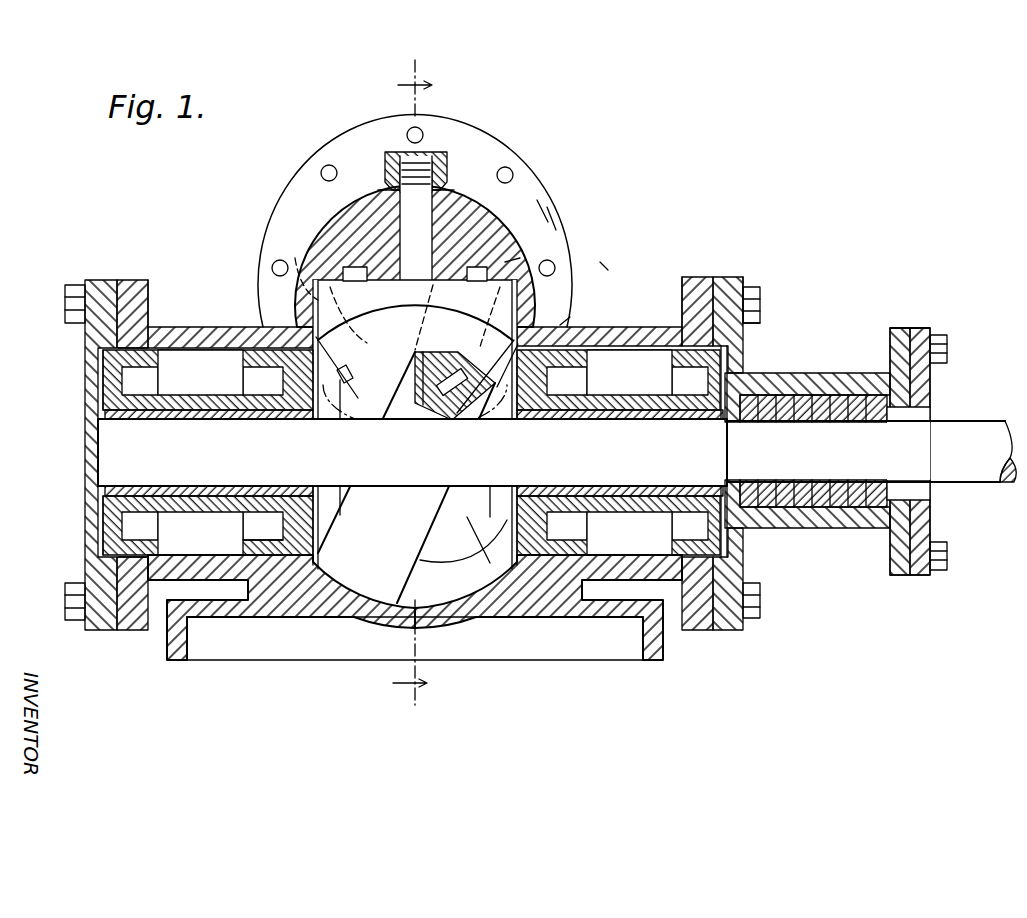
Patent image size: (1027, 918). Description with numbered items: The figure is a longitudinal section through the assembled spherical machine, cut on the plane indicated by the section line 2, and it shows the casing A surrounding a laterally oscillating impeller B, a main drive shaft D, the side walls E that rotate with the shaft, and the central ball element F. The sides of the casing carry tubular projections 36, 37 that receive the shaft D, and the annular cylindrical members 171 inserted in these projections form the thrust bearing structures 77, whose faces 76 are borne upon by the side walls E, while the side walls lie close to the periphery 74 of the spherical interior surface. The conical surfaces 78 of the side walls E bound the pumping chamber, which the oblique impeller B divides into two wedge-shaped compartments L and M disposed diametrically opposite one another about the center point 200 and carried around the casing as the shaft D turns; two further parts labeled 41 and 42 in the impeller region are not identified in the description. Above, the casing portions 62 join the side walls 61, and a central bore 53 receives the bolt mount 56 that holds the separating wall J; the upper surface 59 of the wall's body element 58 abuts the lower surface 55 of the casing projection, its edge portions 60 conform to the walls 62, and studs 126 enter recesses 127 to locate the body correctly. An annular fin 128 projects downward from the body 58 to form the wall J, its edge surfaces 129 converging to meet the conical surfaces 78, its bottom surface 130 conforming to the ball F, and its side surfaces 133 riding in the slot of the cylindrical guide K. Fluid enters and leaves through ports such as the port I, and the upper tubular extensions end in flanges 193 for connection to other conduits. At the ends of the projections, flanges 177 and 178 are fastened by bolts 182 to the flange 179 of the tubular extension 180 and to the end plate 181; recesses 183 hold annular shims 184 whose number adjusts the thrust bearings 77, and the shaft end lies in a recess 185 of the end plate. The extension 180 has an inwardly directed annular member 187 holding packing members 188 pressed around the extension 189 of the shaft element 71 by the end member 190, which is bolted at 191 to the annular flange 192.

The section line 2 is at (417, 372).
The tubular projection 36 is at (208, 327).
The tubular projection 37 is at (636, 327).
The piston 41 is at (390, 440).
The cylinder wall 42 is at (356, 398).
The central bore 53 is at (430, 223).
The lower surface 55 is at (375, 268).
The central bolt mount 56 is at (397, 114).
The body element 58 is at (600, 262).
The upper surface 59 is at (345, 305).
The edge portions 60 is at (298, 318).
The side walls 61 is at (305, 283).
The casing portions 62 is at (318, 233).
The shaft element 71 is at (557, 452).
The periphery 74 is at (300, 578).
The faces 76 is at (287, 530).
The thrust bearing structures 77 is at (158, 530).
The conical surfaces 78 is at (510, 565).
The studs 126 is at (505, 262).
The recesses 127 is at (537, 200).
The annular fin 128 is at (470, 320).
The edge surfaces 129 is at (463, 440).
The bottom surface 130 is at (353, 330).
The side surfaces 133 is at (283, 418).
The annular cylindrical members 171 is at (200, 402).
The flange 177 is at (703, 283).
The flange 178 is at (137, 280).
The flange 179 is at (748, 282).
The tubular extension 180 is at (835, 382).
The end plate 181 is at (87, 338).
The bolts 182 is at (65, 302).
The recesses 183 is at (97, 347).
The annular shims 184 is at (110, 520).
The recess 185 is at (97, 455).
The annular member 187 is at (740, 405).
The annular packing members 188 is at (843, 500).
The extension 189 is at (980, 415).
The end member 190 is at (930, 382).
The bolts 191 is at (947, 350).
The annular flange 192 is at (902, 333).
The flanges 193 is at (478, 136).
The center point 200 is at (415, 455).
The casing A is at (300, 296).
The impeller B is at (355, 585).
The main drive shaft D is at (115, 455).
The side walls E is at (327, 420).
The central ball element F is at (482, 575).
The port I is at (547, 207).
The separating wall J is at (295, 258).
The cylindrical slotted guide K is at (570, 317).
The wedge-shaped compartment L is at (327, 463).
The wedge-shaped compartment M is at (456, 582).